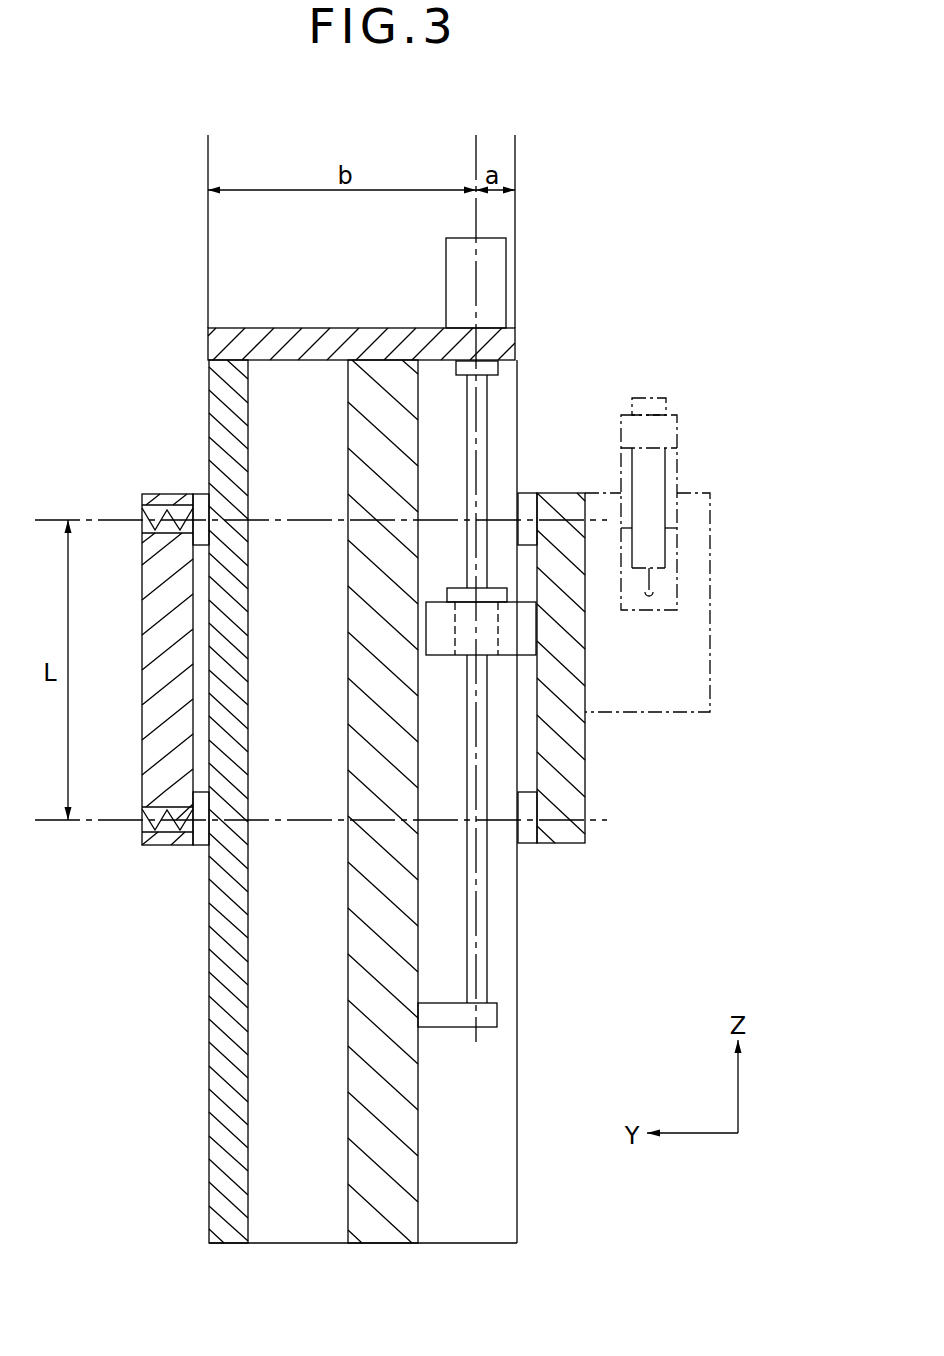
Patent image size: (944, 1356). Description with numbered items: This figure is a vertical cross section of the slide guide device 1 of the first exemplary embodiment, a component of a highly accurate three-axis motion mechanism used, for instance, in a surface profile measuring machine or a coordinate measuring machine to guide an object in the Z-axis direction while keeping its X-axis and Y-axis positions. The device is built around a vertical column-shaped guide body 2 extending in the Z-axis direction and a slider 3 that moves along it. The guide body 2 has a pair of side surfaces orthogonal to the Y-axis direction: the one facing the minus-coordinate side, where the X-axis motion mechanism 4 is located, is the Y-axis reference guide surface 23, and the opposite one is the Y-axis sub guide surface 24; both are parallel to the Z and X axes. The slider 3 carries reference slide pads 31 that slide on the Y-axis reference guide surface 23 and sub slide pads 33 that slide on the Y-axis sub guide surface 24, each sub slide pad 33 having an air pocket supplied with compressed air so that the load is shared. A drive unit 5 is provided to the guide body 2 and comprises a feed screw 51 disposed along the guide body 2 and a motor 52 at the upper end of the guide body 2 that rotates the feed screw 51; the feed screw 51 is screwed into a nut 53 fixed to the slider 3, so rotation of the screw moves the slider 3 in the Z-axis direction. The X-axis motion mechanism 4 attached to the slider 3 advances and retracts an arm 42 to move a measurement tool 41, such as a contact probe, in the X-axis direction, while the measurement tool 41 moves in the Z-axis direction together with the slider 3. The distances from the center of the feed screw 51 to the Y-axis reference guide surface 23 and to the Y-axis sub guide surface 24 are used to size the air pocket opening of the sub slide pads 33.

The slide guide device 1 is at (621, 118).
The guide body 2 is at (522, 332).
The Y-axis reference guide surface 23 is at (518, 393).
The Y-axis sub guide surface 24 is at (208, 398).
The slider 3 is at (571, 486).
The reference slide pads 31 is at (525, 503).
The sub slide pads 33 is at (200, 503).
The X-axis motion mechanism 4 is at (691, 474).
The measurement tool 41 is at (648, 398).
The arm 42 is at (678, 548).
The drive unit 5 is at (398, 225).
The feed screw 51 is at (466, 403).
The motor 52 is at (446, 256).
The nut 53 is at (433, 600).